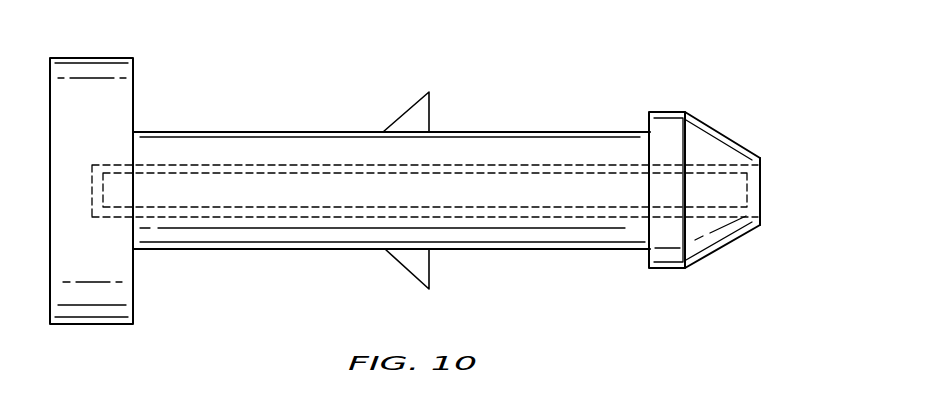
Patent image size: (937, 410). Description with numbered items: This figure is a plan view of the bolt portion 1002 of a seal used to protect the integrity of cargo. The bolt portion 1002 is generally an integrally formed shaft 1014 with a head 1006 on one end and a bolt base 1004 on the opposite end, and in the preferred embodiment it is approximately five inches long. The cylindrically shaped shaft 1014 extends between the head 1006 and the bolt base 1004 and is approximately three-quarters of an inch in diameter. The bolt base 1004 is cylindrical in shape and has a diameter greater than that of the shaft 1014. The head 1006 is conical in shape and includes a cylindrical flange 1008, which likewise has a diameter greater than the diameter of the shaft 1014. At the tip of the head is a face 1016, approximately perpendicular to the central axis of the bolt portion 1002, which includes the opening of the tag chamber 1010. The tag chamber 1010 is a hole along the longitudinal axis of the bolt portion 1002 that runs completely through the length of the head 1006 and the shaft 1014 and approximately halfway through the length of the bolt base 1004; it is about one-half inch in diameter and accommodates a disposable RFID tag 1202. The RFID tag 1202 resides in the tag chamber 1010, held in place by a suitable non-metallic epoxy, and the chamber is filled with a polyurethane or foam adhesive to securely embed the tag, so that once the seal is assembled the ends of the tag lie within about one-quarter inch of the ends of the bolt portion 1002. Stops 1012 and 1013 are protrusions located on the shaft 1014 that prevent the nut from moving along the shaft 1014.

The bolt portion 1002 is at (503, 52).
The bolt base 1004 is at (90, 58).
The head 1006 is at (735, 135).
The cylindrical flange 1008 is at (668, 112).
The tag chamber 1010 is at (205, 165).
The stop 1012 is at (415, 278).
The stop 1013 is at (420, 104).
The shaft 1014 is at (245, 249).
The face 1016 is at (762, 160).
The RFID tag 1202 is at (512, 173).